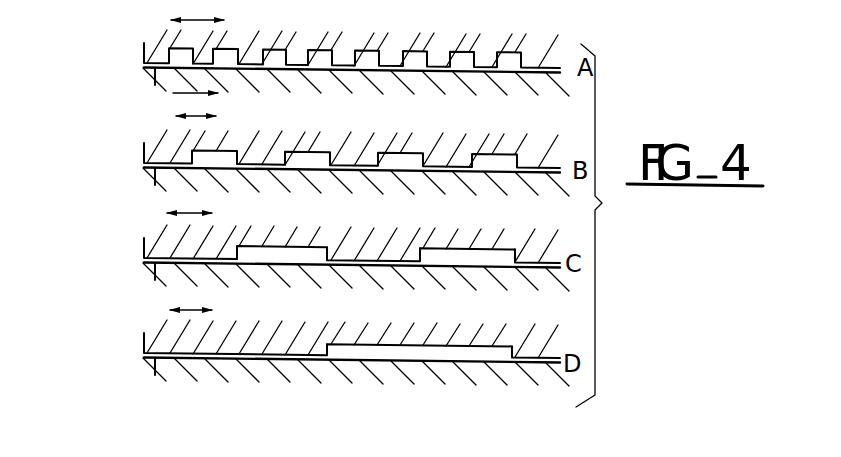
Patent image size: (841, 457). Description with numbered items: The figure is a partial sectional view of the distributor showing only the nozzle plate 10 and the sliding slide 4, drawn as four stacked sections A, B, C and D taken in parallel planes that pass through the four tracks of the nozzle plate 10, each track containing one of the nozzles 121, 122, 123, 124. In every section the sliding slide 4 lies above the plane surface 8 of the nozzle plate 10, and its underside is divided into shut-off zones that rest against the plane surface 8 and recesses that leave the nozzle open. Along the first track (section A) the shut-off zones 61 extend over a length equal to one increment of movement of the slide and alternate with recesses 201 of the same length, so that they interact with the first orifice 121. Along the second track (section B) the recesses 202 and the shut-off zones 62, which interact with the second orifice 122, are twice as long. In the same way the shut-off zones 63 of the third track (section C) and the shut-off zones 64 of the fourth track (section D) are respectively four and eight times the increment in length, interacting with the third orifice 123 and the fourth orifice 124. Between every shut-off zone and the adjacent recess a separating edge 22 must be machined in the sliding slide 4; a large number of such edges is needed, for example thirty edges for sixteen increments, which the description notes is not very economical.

The sliding slide 4 is at (372, 46).
The plane surface 8 is at (325, 70).
The nozzle plate 10 is at (268, 87).
The first nozzle 121 is at (152, 84).
The second nozzle 122 is at (152, 184).
The third nozzle 123 is at (152, 275).
The fourth nozzle 124 is at (152, 370).
The recess of first track 201 is at (464, 61).
The recess of second track 202 is at (503, 162).
The separating edge 22 is at (300, 158).
The shut-off zone of first track 61 is at (255, 63).
The shut-off zone of second track 62 is at (362, 157).
The shut-off zone of third track 63 is at (390, 262).
The shut-off zone of fourth track 64 is at (263, 342).